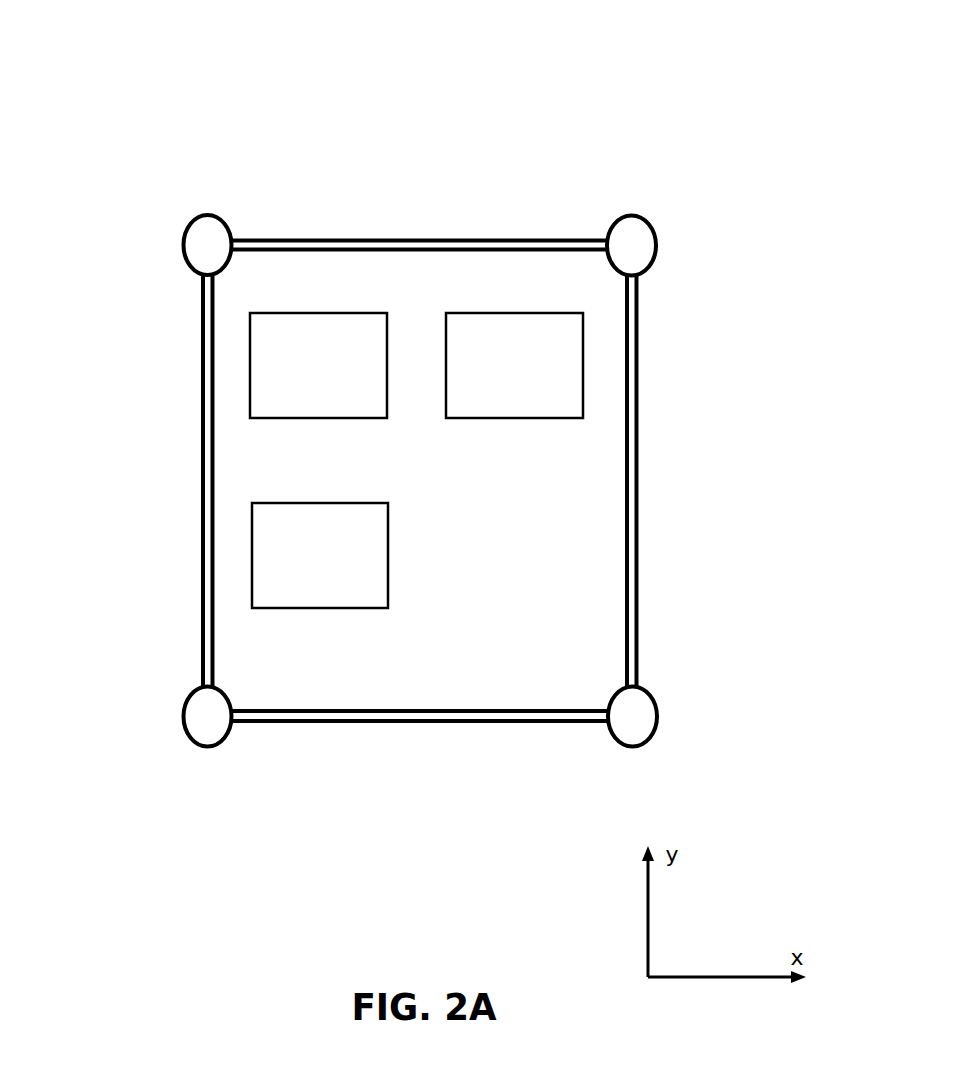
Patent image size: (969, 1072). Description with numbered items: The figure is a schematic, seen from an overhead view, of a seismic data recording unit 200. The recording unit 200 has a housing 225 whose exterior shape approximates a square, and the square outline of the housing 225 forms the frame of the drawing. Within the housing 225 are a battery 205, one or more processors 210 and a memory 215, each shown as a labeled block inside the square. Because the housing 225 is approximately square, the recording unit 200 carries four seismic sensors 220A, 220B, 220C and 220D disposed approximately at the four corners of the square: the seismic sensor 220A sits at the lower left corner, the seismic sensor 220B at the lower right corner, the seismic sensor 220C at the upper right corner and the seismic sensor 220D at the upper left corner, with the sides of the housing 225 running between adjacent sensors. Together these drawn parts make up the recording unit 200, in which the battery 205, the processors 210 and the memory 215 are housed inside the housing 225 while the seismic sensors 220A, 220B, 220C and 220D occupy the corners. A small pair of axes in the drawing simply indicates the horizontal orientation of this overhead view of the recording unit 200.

The seismic data recording unit 200 is at (402, 421).
The battery 205 is at (318, 365).
The processors 210 is at (514, 365).
The memory 215 is at (320, 555).
The seismic sensor 220A is at (183, 717).
The seismic sensor 220B is at (658, 718).
The seismic sensor 220C is at (657, 250).
The seismic sensor 220D is at (183, 253).
The housing 225 is at (421, 722).